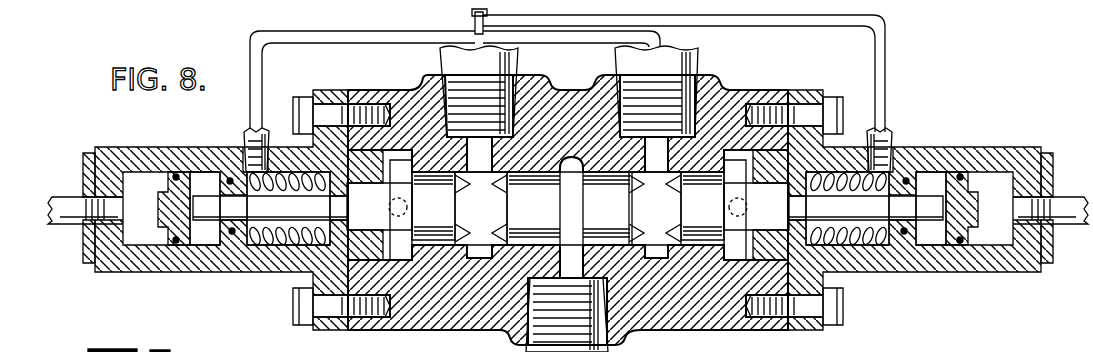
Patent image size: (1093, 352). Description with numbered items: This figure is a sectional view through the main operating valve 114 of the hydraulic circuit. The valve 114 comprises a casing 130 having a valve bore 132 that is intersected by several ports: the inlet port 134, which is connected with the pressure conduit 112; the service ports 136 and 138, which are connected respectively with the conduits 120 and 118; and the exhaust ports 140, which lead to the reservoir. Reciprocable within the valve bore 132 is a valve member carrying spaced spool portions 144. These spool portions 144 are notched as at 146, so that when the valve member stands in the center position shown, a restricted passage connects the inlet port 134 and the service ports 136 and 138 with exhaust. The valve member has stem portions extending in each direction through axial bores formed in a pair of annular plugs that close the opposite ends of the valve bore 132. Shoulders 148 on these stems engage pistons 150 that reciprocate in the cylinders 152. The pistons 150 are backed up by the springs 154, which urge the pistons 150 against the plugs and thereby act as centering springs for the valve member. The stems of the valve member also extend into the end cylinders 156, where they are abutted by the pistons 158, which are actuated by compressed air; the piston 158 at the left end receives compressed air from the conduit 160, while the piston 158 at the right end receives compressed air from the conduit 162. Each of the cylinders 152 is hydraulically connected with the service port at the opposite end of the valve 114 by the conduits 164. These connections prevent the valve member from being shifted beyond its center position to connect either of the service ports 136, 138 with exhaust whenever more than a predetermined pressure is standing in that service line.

The pressure conduit 112 is at (632, 350).
The valve 114 is at (748, 92).
The conduit 118 is at (692, 58).
The conduit 120 is at (443, 61).
The casing 130 is at (756, 316).
The valve bore 132 is at (609, 241).
The inlet port 134 is at (567, 257).
The service port 136 is at (483, 163).
The service port 138 is at (660, 163).
The exhaust ports 140 is at (405, 237).
The spool portions 144 is at (493, 231).
The notches 146 is at (712, 212).
The shoulders 148 is at (790, 200).
The pistons 150 is at (326, 200).
The cylinders 152 is at (283, 246).
The springs 154 is at (255, 240).
The end cylinders 156 is at (203, 238).
The pistons 158 is at (172, 247).
The conduit 160 is at (72, 198).
The conduit 162 is at (1066, 194).
The conduits 164 is at (290, 72).